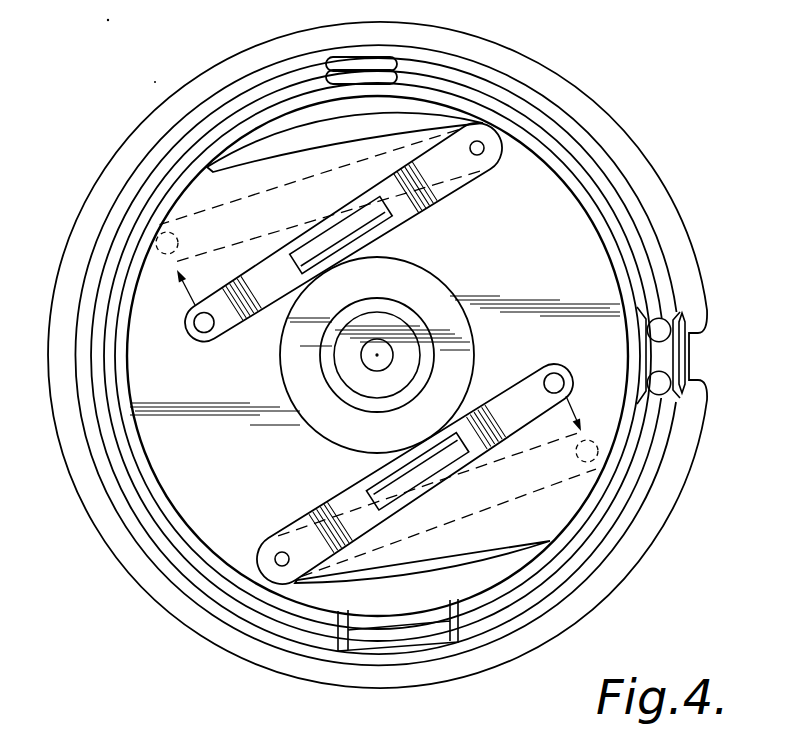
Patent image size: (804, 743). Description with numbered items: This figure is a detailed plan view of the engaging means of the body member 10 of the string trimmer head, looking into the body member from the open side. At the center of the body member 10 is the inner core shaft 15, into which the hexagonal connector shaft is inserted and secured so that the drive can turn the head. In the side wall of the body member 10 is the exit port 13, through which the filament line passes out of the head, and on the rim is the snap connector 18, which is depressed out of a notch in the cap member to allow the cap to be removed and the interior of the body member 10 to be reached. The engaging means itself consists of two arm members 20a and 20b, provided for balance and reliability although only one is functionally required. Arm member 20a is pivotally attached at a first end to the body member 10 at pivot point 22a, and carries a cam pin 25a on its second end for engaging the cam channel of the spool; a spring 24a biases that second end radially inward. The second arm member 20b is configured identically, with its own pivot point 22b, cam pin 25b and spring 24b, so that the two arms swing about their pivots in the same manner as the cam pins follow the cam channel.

The body member 10 is at (98, 200).
The exit port 13 is at (663, 357).
The inner core shaft 15 is at (432, 326).
The snap connector 18 is at (430, 638).
The arm member 20a is at (495, 398).
The arm member 20b is at (278, 290).
The pivot point 22a is at (279, 558).
The pivot point 22b is at (479, 152).
The spring 24a is at (407, 474).
The spring 24b is at (363, 233).
The cam pin 25a is at (557, 376).
The cam pin 25b is at (202, 333).